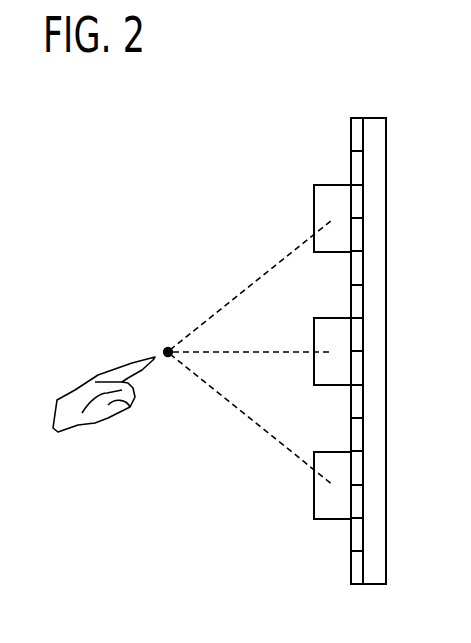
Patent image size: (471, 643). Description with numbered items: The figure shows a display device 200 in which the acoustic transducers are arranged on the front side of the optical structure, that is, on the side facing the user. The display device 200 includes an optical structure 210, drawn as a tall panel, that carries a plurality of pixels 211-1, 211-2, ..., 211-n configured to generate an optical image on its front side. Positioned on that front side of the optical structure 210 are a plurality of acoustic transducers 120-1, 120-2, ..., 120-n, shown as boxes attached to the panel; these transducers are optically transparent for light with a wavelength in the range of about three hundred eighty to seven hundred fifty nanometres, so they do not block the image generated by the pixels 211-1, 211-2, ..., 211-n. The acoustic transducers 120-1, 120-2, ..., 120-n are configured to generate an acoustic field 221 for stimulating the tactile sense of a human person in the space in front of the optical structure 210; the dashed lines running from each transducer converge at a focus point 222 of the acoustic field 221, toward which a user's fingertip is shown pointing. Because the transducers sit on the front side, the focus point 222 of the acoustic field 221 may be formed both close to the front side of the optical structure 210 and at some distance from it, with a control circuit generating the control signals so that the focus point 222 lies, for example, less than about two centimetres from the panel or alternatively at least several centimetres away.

The display device 200 is at (131, 582).
The optical structure 210 is at (370, 118).
The pixel 211-1 is at (351, 131).
The pixel 211-2 is at (351, 168).
The pixel 211-n is at (351, 565).
The acoustic transducer 120-1 is at (314, 218).
The acoustic transducer 120-2 is at (314, 354).
The acoustic transducer 120-n is at (314, 488).
The acoustic field 221 is at (167, 397).
The focus point 222 is at (163, 348).